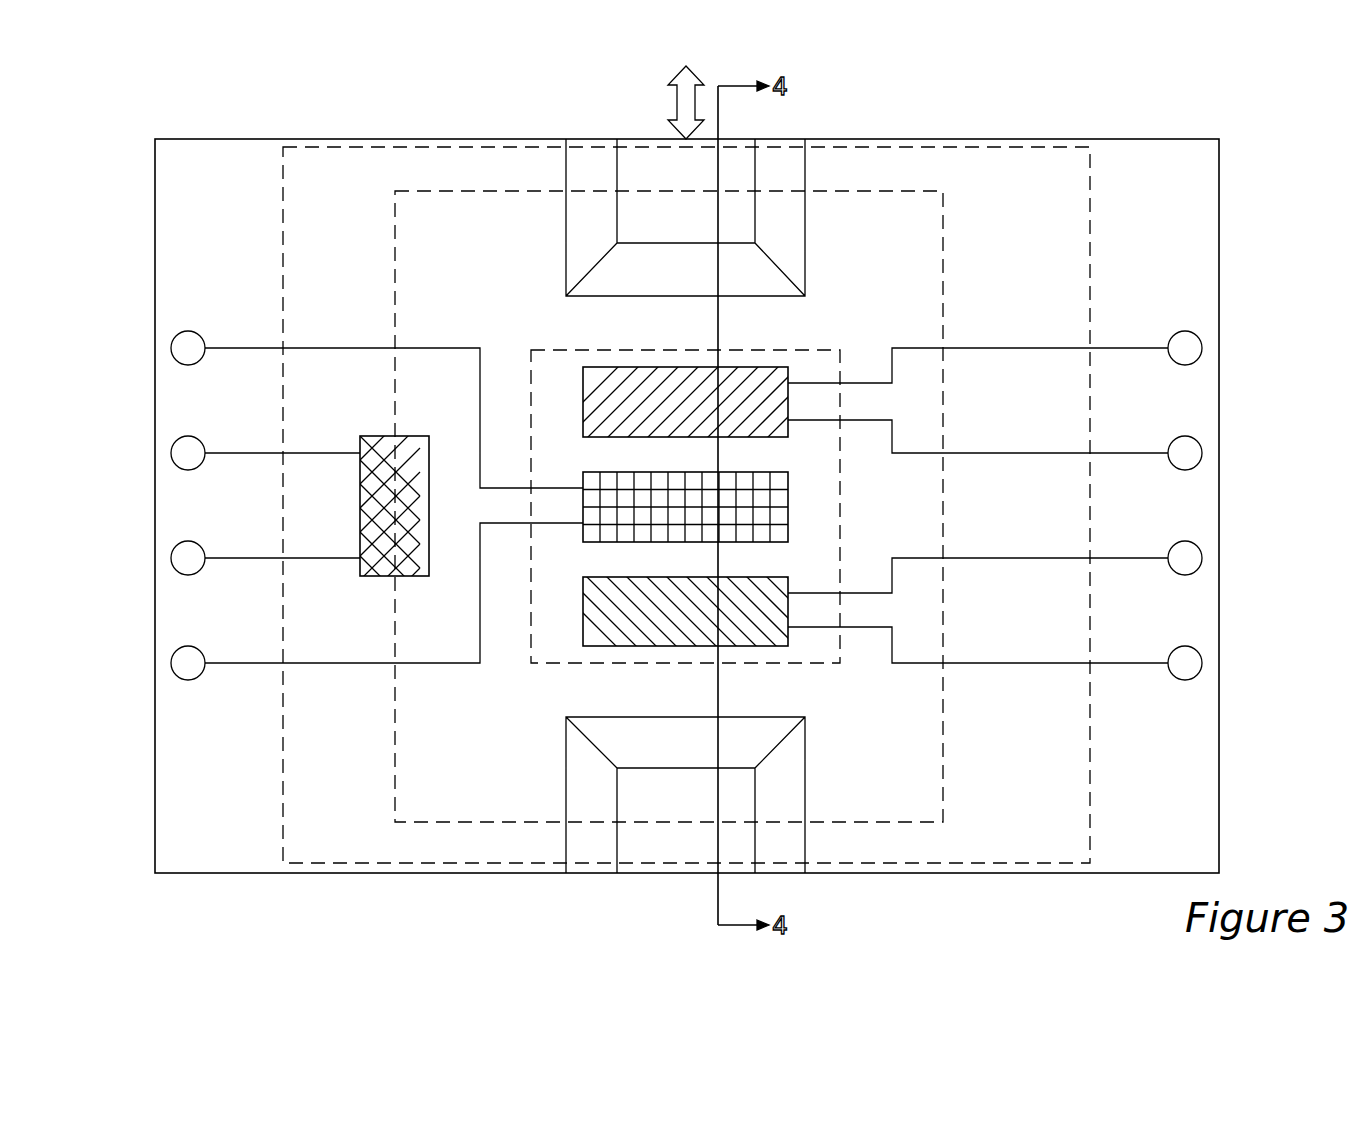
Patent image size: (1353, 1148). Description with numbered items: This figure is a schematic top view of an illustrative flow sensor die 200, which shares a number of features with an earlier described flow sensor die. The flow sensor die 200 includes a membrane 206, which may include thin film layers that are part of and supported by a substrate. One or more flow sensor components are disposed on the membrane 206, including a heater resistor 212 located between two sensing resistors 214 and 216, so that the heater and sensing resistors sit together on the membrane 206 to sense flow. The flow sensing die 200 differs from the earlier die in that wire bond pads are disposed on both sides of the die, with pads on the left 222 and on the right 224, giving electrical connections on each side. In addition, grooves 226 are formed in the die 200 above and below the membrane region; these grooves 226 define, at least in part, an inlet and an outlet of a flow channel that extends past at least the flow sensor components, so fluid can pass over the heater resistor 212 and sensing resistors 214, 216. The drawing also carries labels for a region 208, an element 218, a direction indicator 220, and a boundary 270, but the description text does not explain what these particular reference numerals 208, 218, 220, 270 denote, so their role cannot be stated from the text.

The flow sensor die 200 is at (1247, 120).
The membrane 206 is at (553, 378).
The electrical traces 208 is at (840, 532).
The heater resistor 212 is at (780, 501).
The sensing resistor 214 is at (735, 638).
The sensing resistor 216 is at (755, 378).
The heater element 218 is at (378, 440).
The direction of motion 220 is at (677, 103).
The left side wire bond pads 222 is at (185, 348).
The right side wire bond pads 224 is at (1195, 352).
The grooves 226 is at (745, 157).
The housing boundary 270 is at (887, 191).